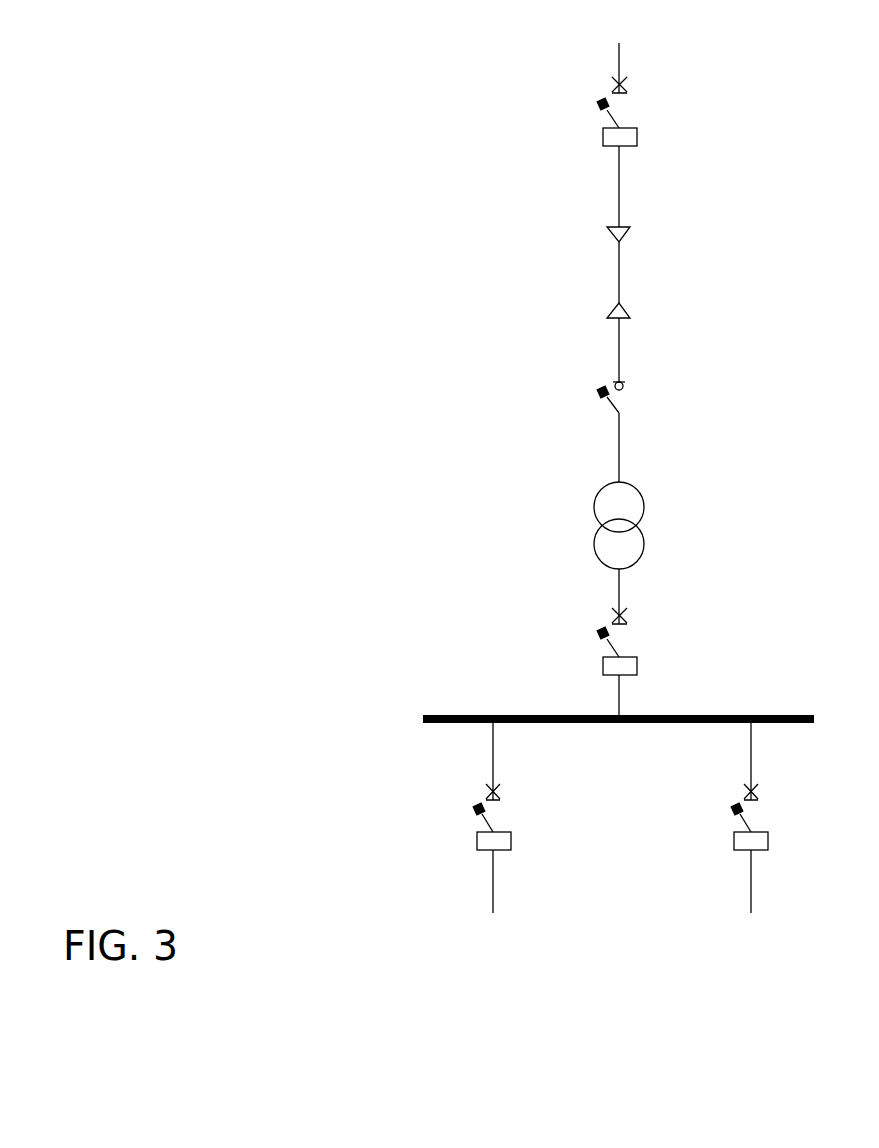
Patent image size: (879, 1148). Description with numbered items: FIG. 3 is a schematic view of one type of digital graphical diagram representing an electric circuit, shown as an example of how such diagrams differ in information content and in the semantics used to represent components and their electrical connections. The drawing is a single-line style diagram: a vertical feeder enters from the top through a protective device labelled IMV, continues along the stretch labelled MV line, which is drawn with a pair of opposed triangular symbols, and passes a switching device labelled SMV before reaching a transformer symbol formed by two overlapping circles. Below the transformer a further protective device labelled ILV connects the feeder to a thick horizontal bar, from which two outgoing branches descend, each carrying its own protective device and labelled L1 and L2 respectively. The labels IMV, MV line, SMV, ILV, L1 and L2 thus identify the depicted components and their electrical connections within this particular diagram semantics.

The medium-voltage circuit breaker / protection relay IMV is at (675, 112).
The medium-voltage line with surge arresters MV line is at (731, 272).
The medium-voltage switch (disconnector) SMV is at (682, 405).
The low-voltage circuit breaker / protection relay ILV is at (675, 648).
The low-voltage load feeder 1 circuit breaker L1 is at (519, 818).
The low-voltage load feeder 2 circuit breaker L2 is at (785, 818).